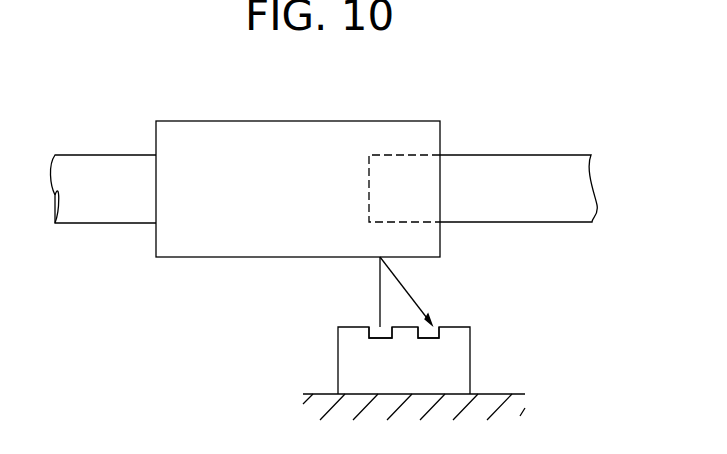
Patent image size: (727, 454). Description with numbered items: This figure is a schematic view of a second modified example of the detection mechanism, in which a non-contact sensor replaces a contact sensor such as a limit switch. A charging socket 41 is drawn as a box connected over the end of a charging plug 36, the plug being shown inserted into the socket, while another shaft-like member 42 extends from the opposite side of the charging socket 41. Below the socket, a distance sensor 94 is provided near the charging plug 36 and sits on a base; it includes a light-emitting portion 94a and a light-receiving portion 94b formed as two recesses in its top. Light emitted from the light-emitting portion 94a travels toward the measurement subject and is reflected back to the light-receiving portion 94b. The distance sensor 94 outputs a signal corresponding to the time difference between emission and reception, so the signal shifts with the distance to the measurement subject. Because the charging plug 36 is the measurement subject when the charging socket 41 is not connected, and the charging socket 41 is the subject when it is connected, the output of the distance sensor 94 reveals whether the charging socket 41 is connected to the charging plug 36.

The charging socket 41 is at (227, 121).
The input shaft 42 is at (104, 155).
The charging plug 36 is at (558, 222).
The distance sensor 94 is at (470, 352).
The light-emitting portion 94a is at (373, 327).
The light-receiving portion 94b is at (433, 327).